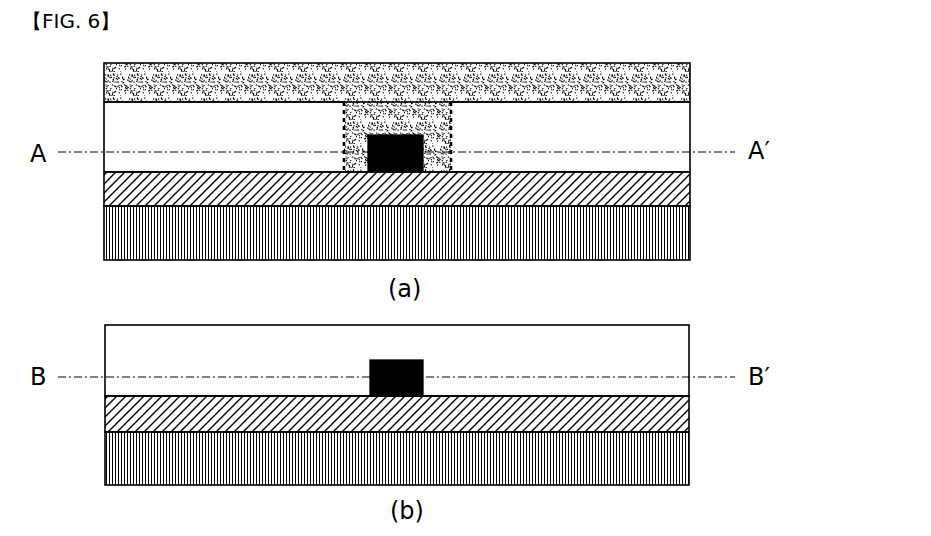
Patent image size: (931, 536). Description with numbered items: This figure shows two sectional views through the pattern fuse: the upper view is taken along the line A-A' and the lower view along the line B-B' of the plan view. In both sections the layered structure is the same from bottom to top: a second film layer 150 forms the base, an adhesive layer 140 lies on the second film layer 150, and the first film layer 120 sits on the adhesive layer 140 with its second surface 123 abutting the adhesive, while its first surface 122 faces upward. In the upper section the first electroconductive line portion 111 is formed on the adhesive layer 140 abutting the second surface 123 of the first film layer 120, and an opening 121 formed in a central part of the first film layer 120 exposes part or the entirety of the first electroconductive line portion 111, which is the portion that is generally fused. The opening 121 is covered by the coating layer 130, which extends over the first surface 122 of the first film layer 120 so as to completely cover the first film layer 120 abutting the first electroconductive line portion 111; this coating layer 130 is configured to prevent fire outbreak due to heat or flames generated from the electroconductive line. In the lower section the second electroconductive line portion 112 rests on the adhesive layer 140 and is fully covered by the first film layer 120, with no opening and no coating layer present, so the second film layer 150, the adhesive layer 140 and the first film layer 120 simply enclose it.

The first electroconductive line portion 111 is at (456, 138).
The second electroconductive line portion 112 is at (458, 363).
The first film layer 120 is at (461, 249).
The opening 121 is at (410, 124).
The first surface 122 is at (570, 86).
The second surface 123 is at (397, 270).
The coating layer 130 is at (461, 81).
The adhesive layer 140 is at (461, 301).
The second film layer 150 is at (461, 345).